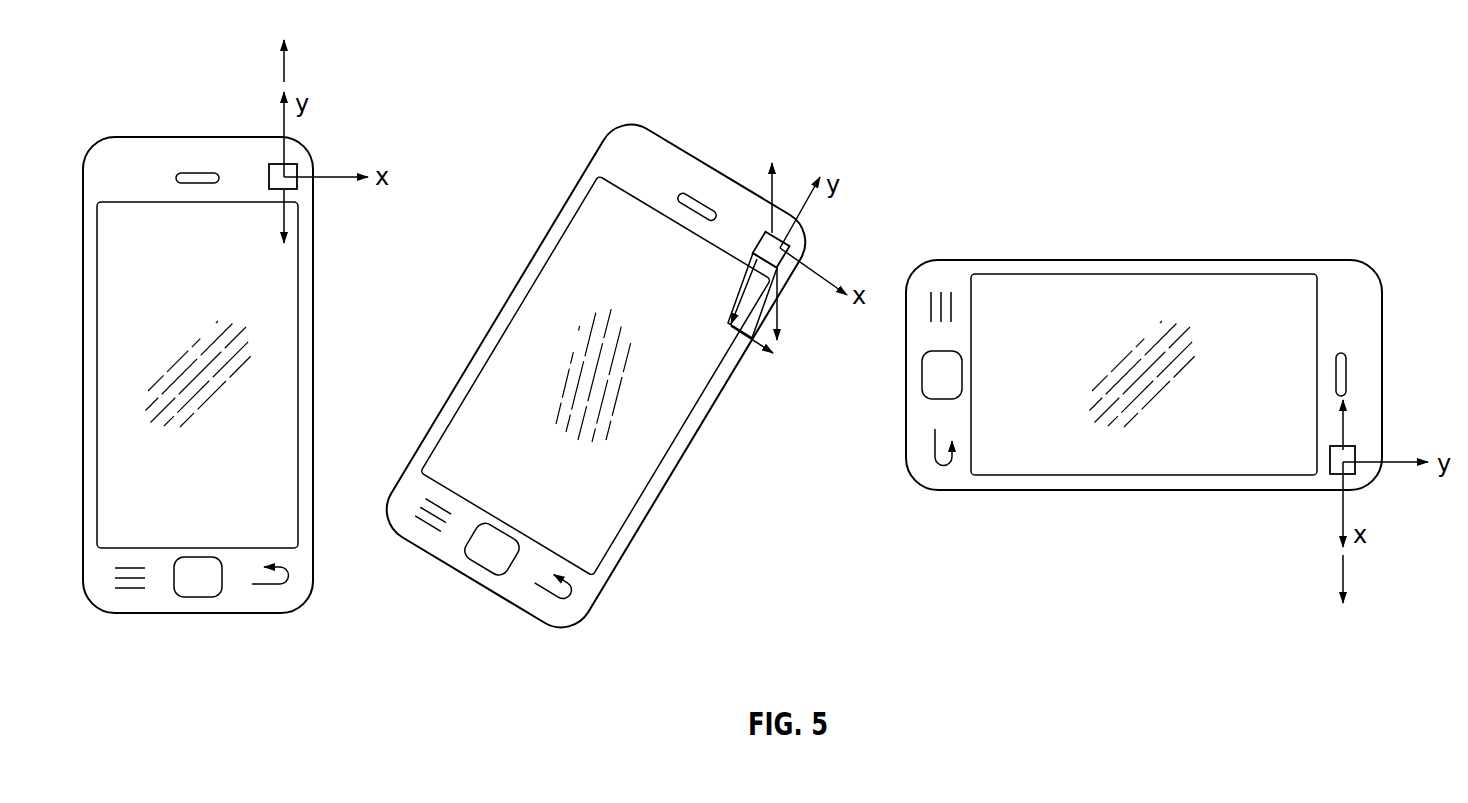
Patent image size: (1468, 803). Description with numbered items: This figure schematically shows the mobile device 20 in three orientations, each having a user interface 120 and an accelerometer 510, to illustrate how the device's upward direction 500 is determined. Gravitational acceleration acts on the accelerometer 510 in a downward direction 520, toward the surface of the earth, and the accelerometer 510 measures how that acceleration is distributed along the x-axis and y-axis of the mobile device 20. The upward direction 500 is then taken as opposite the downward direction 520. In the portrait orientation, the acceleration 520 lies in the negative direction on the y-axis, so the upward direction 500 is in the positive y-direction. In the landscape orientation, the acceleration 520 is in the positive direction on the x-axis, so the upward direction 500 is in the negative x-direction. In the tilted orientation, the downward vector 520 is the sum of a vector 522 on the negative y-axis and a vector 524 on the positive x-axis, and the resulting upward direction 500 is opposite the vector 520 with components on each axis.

The mobile device 20 is at (158, 614).
The user interface 120 is at (260, 498).
The upward direction 500 is at (285, 69).
The accelerometer 510 is at (300, 186).
The downward direction 520 is at (290, 216).
The vector on the y-axis 522 is at (733, 347).
The vector on the x-axis 524 is at (745, 297).